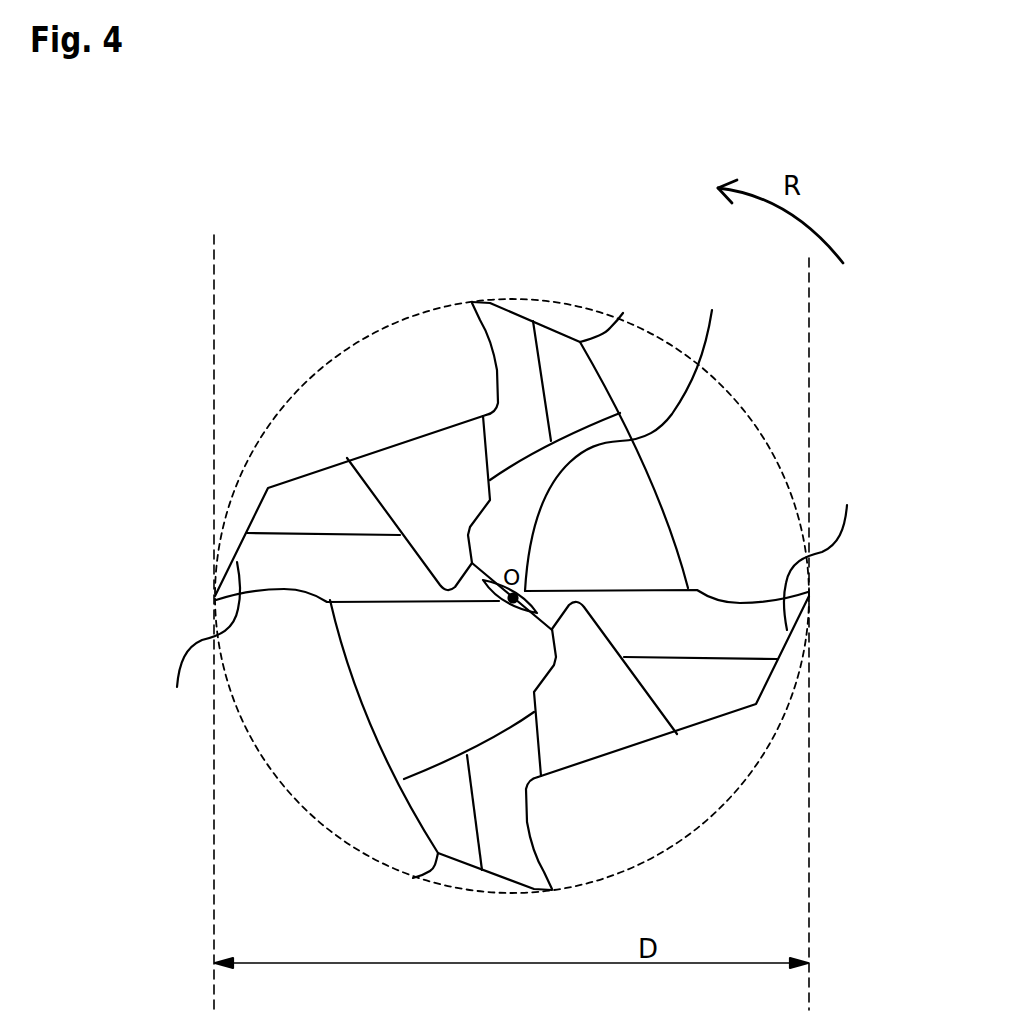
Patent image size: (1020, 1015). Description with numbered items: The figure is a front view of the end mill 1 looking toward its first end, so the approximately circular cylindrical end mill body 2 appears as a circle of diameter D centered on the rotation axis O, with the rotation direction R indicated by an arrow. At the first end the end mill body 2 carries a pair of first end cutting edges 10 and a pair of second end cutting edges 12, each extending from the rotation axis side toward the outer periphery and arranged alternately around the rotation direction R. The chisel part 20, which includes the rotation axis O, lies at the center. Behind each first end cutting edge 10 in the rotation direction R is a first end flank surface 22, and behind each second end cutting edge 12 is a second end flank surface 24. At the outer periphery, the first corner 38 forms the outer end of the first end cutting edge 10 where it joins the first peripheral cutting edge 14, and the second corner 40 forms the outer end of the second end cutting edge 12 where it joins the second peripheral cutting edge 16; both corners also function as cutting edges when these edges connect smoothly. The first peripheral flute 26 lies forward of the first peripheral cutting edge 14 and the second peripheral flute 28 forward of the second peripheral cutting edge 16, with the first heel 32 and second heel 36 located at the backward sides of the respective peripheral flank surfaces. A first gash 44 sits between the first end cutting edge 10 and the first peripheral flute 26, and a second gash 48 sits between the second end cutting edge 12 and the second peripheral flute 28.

The end mill 1 is at (283, 270).
The end mill body 2 is at (850, 413).
The first end cutting edge 10 is at (677, 590).
The second end cutting edge 12 is at (492, 353).
The first peripheral cutting edge 14 is at (808, 592).
The second peripheral cutting edge 16 is at (472, 303).
The chisel part 20 is at (626, 435).
The first end flank surface 22 is at (263, 555).
The second end flank surface 24 is at (525, 337).
The first peripheral flute 26 is at (683, 420).
The second peripheral flute 28 is at (407, 363).
The first heel 32 is at (268, 488).
The second heel 36 is at (623, 313).
The first corner 38 is at (500, 600).
The second corner 40 is at (538, 579).
The first gash 44 is at (623, 548).
The second gash 48 is at (442, 518).